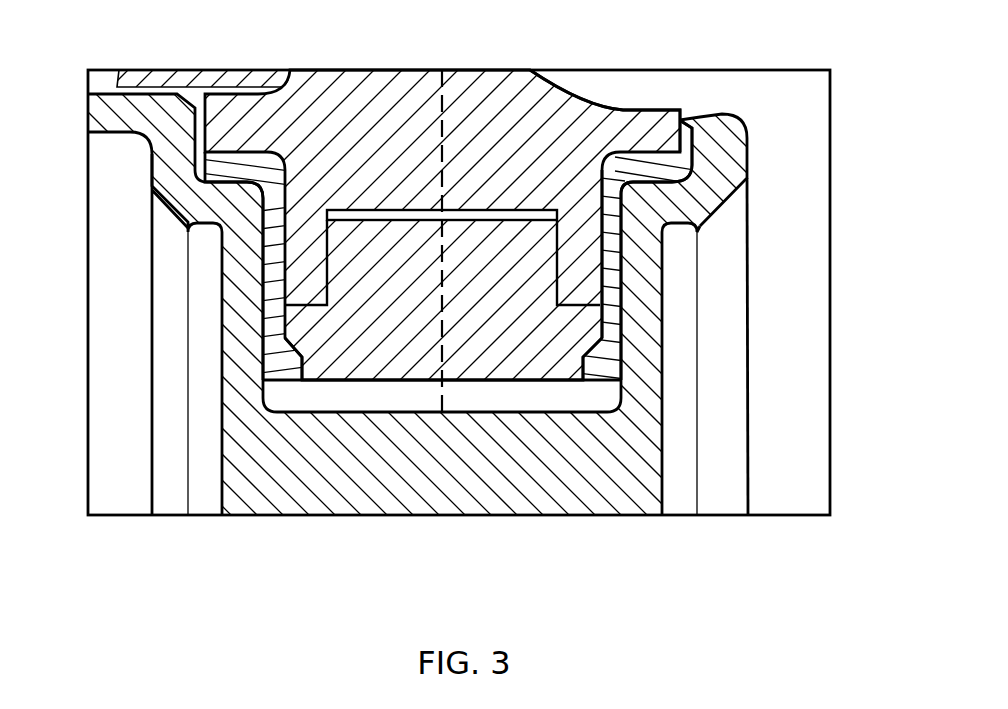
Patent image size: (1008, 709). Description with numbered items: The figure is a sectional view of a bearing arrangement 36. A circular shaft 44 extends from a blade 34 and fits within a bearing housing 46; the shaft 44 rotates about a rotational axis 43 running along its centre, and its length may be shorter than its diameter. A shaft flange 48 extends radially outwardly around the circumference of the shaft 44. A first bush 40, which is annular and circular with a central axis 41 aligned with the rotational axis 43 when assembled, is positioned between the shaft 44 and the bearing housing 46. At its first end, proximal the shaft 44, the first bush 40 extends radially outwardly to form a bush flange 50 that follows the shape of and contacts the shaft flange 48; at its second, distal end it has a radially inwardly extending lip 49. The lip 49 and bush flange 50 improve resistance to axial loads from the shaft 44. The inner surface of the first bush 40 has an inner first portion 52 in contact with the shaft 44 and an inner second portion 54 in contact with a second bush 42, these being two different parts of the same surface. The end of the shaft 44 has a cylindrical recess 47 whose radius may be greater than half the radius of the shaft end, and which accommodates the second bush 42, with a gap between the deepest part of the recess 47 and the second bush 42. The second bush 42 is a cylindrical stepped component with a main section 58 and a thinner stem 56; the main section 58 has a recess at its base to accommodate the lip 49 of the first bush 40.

The blade 34 is at (330, 78).
The bearing arrangement 36 is at (712, 400).
The first bush 40 is at (607, 202).
The central axis 41 is at (445, 338).
The second bush 42 is at (490, 323).
The rotational axis 43 is at (444, 110).
The shaft 44 is at (377, 132).
The bearing housing 46 is at (648, 358).
The recess 47 is at (495, 207).
The shaft flange 48 is at (622, 122).
The lip 49 is at (270, 362).
The bush flange 50 is at (217, 167).
The inner first portion 52 is at (597, 247).
The inner second portion 54 is at (600, 330).
The stem 56 is at (416, 260).
The main section 58 is at (474, 364).